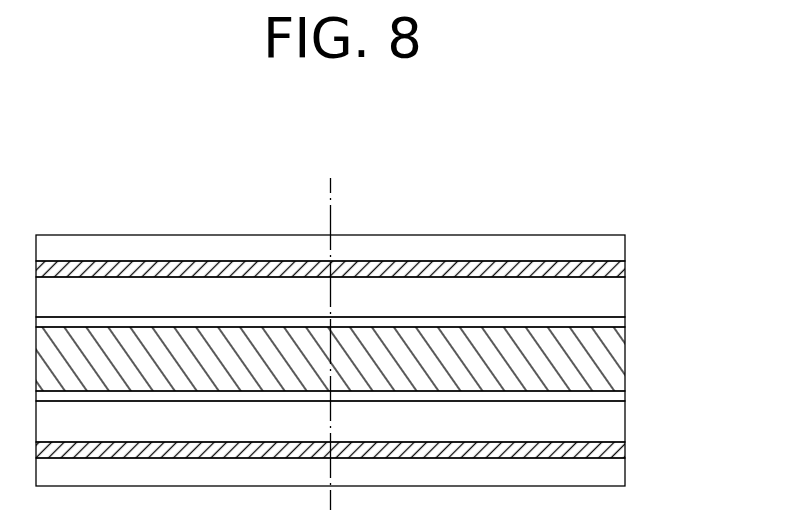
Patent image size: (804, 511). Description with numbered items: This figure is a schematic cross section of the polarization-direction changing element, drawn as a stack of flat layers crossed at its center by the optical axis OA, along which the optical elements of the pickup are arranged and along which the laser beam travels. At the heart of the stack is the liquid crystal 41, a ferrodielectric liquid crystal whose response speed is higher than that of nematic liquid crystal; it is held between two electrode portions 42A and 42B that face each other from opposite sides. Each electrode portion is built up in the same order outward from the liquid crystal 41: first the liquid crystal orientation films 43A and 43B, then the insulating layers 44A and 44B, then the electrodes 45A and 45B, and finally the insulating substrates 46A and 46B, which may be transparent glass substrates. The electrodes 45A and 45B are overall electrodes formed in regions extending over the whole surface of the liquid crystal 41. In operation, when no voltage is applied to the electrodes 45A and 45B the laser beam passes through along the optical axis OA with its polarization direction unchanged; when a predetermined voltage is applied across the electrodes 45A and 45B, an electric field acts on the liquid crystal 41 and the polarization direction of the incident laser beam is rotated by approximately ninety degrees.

The liquid crystal 41 is at (625, 362).
The electrode portion 42A is at (415, 443).
The electrode portion 42B is at (415, 274).
The liquid crystal orientation film 43A is at (625, 395).
The liquid crystal orientation film 43B is at (375, 320).
The insulating layer 44A is at (625, 420).
The insulating layer 44B is at (625, 302).
The electrode 45A is at (625, 450).
The electrode 45B is at (625, 275).
The insulating substrate 46A is at (375, 482).
The insulating substrate 46B is at (625, 250).
The optical axis OA is at (329, 331).